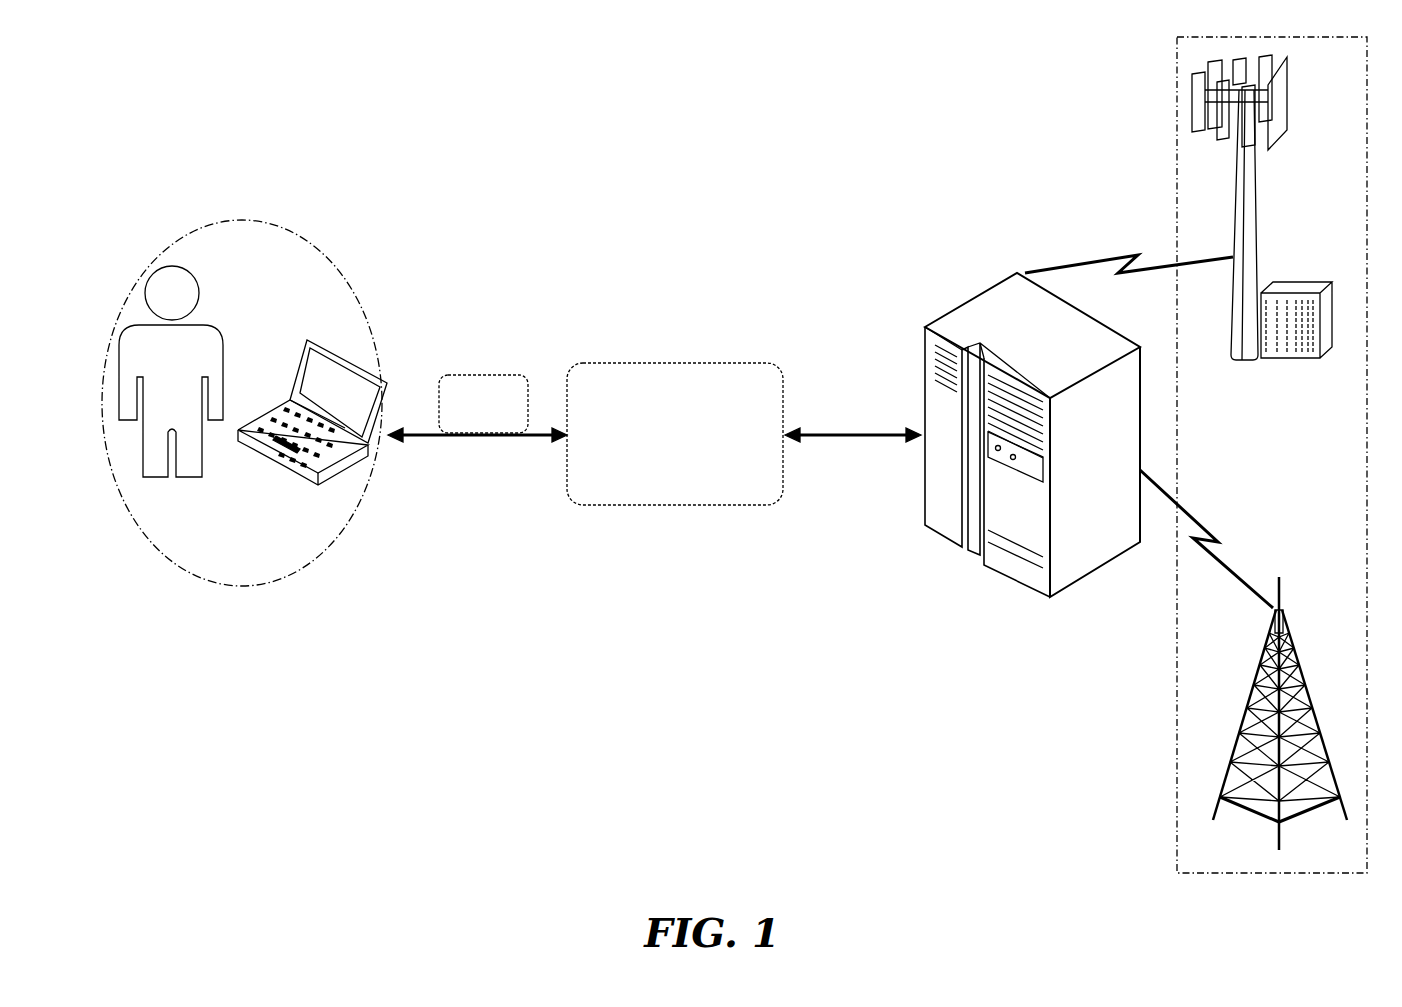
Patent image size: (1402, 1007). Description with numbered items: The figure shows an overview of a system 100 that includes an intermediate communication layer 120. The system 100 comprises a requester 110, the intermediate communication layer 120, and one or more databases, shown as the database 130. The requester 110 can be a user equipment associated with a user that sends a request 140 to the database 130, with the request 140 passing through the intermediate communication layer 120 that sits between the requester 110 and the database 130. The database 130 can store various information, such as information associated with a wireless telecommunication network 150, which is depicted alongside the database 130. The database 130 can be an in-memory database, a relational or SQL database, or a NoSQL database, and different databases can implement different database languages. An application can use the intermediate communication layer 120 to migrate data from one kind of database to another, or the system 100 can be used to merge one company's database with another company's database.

The system 100 is at (358, 84).
The requester 110 is at (235, 222).
The intermediate communication layer 120 is at (744, 434).
The database 130 is at (985, 298).
The request 140 is at (477, 408).
The wireless telecommunication network 150 is at (1177, 90).